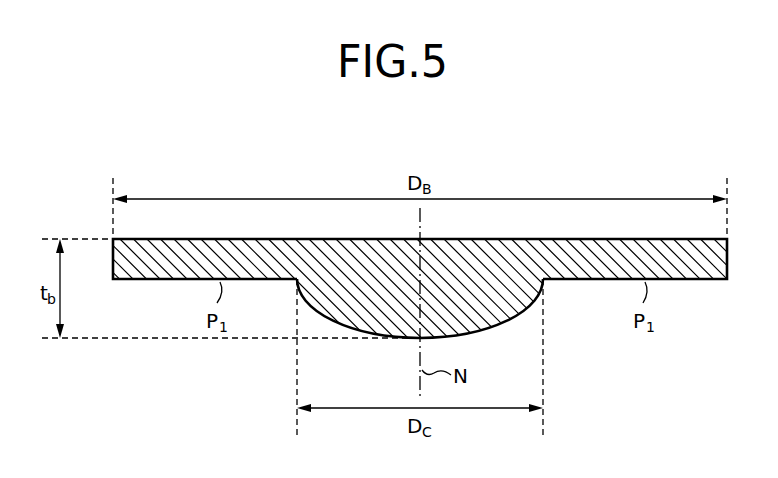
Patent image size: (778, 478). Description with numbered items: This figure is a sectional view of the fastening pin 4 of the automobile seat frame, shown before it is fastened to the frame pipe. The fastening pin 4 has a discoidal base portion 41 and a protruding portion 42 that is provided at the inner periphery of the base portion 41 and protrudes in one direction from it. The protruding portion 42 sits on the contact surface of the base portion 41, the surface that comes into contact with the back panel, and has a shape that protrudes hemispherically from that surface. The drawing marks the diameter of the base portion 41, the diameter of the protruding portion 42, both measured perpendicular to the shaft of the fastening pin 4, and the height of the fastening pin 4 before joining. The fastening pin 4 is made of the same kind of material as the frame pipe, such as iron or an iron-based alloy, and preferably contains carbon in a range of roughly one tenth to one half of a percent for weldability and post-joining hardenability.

The fastening pin 4 is at (422, 235).
The base portion 41 is at (295, 249).
The protruding portion 42 is at (520, 292).